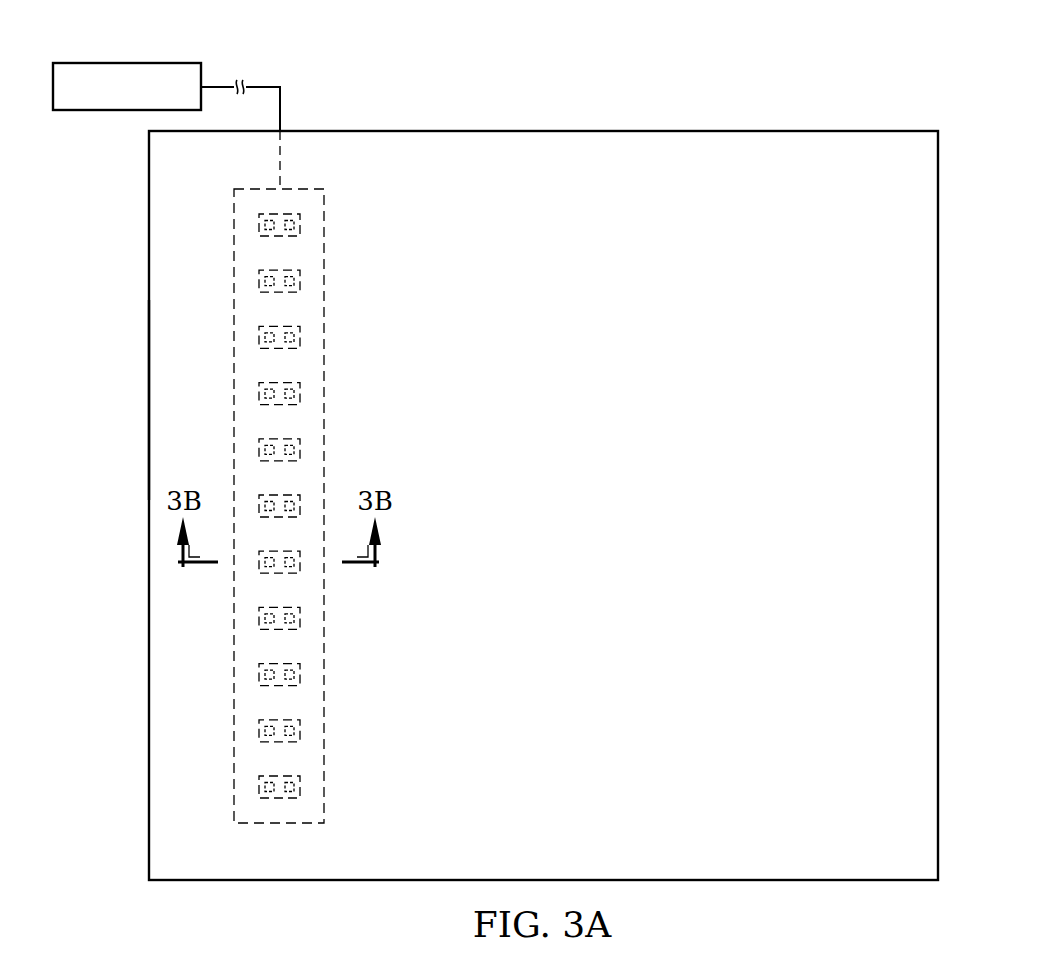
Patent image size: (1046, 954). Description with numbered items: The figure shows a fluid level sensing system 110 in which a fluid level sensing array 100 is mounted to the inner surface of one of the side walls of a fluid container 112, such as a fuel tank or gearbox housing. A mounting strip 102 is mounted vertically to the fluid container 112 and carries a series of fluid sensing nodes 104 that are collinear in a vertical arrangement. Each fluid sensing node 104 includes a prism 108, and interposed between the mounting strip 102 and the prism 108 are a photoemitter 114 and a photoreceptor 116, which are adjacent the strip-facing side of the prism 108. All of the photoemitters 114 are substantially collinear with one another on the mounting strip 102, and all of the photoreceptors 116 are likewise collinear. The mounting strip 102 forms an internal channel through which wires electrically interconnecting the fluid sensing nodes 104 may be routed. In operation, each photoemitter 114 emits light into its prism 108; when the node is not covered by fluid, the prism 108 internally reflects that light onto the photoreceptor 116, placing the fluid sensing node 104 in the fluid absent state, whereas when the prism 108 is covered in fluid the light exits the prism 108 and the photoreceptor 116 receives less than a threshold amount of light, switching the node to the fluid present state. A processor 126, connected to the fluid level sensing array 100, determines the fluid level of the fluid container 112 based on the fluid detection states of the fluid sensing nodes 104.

The fluid level sensing array 100 is at (325, 243).
The mounting strip 102 is at (324, 308).
The fluid sensing node 104 is at (303, 569).
The prism 108 is at (262, 568).
The fluid level sensing system 110 is at (760, 118).
The fluid container 112 is at (149, 400).
The photoemitter 114 is at (268, 574).
The photoreceptor 116 is at (291, 574).
The processor 126 is at (127, 63).